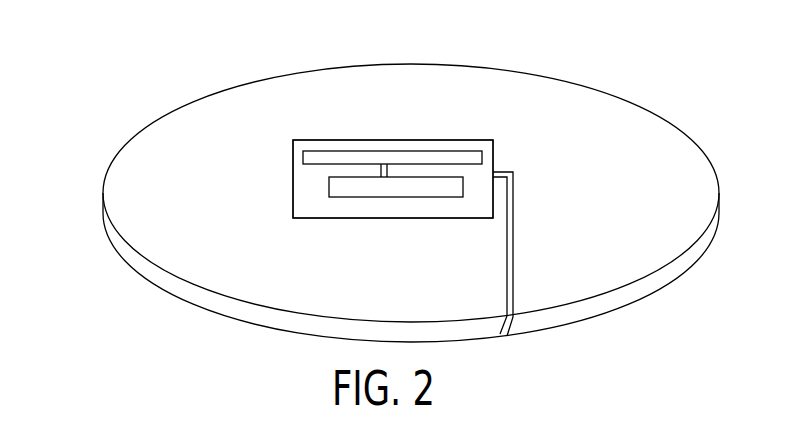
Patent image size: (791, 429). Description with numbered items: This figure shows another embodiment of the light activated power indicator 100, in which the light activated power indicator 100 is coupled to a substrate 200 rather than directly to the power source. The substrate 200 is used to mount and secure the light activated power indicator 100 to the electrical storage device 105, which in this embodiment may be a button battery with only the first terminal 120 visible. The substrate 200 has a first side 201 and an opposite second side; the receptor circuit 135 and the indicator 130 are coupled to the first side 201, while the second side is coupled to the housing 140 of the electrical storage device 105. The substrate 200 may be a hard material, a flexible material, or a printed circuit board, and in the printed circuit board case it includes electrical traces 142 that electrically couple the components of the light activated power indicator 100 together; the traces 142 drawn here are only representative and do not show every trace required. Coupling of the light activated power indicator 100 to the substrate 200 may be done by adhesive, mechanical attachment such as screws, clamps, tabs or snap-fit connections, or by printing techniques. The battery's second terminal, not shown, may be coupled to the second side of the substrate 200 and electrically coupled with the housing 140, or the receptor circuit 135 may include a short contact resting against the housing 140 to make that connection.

The light activated power indicator 100 is at (415, 181).
The electrical storage device 105 is at (381, 203).
The first terminal 120 is at (515, 286).
The indicator 130 is at (385, 198).
The receptor circuit 135 is at (482, 158).
The housing 140 is at (673, 125).
The electrical traces 142 is at (381, 169).
The substrate 200 is at (363, 140).
The first side 201 is at (326, 211).